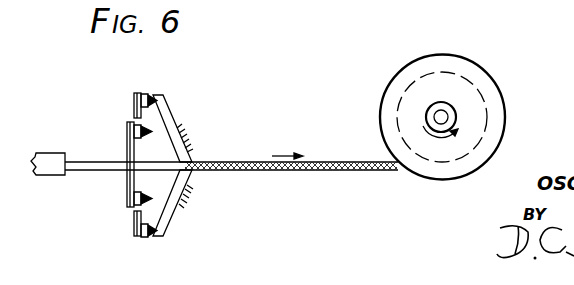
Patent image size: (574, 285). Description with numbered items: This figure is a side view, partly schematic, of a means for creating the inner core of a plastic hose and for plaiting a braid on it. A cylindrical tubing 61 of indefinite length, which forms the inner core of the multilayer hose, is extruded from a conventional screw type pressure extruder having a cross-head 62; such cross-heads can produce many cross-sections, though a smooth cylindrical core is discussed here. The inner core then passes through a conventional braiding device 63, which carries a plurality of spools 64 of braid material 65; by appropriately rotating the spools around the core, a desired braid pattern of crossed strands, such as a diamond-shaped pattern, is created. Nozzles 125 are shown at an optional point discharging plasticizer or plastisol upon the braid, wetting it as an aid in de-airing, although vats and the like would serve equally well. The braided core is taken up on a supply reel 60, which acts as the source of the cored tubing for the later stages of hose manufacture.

The supply reel 60 is at (505, 117).
The cylindrical tubing 61 is at (93, 161).
The cross-head 62 is at (52, 171).
The braiding device 63 is at (122, 225).
The spools 64 is at (156, 100).
The braid material 65 is at (171, 128).
The nozzles 125 is at (200, 146).